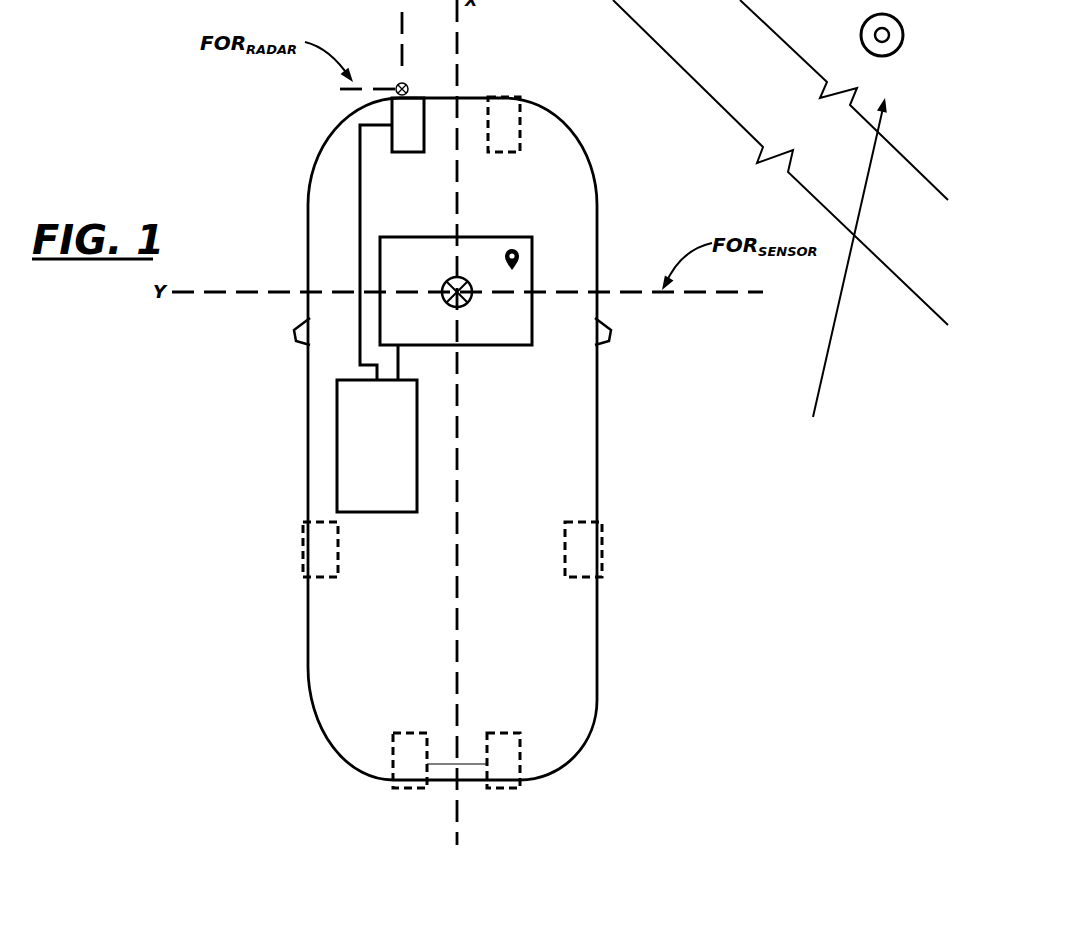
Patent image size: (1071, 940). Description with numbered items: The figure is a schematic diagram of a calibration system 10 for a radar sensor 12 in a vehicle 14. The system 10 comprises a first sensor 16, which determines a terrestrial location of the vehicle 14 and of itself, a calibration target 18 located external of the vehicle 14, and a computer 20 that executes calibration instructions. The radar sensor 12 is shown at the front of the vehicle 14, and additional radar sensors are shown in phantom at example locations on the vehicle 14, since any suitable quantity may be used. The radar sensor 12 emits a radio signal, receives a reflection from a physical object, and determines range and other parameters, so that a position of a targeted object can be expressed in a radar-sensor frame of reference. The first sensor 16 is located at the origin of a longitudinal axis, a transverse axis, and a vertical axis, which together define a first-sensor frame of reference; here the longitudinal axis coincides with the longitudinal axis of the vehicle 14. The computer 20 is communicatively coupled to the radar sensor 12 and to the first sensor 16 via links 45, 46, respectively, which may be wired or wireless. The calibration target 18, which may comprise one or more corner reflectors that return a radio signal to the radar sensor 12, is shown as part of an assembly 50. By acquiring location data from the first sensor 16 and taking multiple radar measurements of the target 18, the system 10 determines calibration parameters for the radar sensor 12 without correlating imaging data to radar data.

The calibration system 10 is at (556, 442).
The radar sensor 12 is at (430, 147).
The vehicle 14 is at (603, 173).
The first sensor 16 is at (432, 233).
The calibration target 18 is at (890, 35).
The computer 20 is at (391, 457).
The link 45 is at (358, 182).
The link 46 is at (400, 357).
The assembly 50 is at (908, 60).